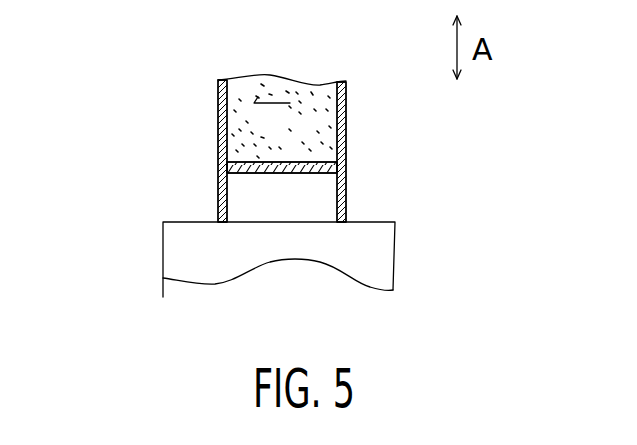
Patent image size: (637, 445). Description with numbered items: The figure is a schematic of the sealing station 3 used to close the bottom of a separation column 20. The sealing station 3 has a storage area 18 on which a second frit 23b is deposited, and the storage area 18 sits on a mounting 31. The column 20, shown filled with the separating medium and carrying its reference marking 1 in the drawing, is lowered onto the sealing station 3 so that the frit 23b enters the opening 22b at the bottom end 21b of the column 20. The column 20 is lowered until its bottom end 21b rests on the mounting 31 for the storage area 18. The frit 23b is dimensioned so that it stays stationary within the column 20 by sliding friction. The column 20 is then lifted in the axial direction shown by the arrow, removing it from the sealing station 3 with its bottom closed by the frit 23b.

The separation column 20 is at (347, 107).
The filling material 1 is at (282, 121).
The second frit 23b is at (343, 160).
The opening 22b is at (232, 184).
The bottom end 21b is at (217, 210).
The storage area 18 is at (323, 193).
The mounting 31 is at (172, 250).
The sealing station 3 is at (500, 228).